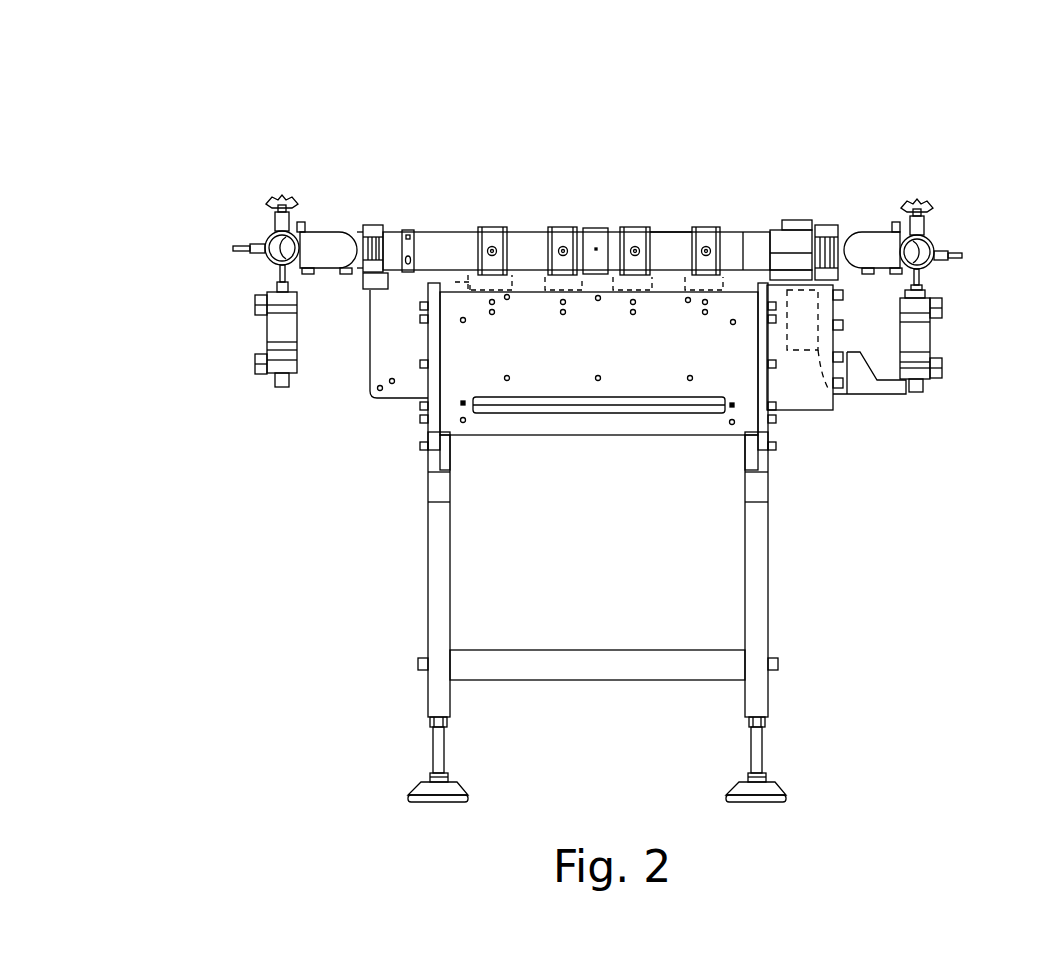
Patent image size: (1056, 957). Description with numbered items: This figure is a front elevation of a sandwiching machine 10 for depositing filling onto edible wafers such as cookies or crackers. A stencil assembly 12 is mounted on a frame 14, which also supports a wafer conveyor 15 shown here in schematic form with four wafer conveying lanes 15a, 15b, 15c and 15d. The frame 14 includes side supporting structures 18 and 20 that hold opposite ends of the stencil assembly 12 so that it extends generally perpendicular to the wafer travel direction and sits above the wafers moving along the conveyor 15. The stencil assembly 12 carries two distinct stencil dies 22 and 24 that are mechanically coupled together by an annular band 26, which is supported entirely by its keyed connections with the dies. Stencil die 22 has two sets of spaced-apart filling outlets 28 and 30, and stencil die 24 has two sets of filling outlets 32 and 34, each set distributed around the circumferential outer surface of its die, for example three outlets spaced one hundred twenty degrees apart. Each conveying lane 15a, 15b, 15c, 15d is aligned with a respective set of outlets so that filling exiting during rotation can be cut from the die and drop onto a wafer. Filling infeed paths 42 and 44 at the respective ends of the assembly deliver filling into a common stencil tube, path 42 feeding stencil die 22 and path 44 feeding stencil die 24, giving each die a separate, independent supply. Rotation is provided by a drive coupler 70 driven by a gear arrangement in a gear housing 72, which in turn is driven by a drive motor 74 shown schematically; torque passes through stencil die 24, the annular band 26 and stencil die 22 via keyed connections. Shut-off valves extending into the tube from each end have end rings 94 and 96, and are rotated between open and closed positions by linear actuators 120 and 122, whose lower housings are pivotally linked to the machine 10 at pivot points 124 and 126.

The sandwiching machine 10 is at (814, 141).
The stencil assembly 12 is at (862, 217).
The frame 14 is at (424, 432).
The wafer conveyor 15 is at (455, 280).
The wafer conveying lane 15a is at (510, 292).
The wafer conveying lane 15b is at (575, 292).
The wafer conveying lane 15c is at (720, 292).
The wafer conveying lane 15d is at (648, 292).
The side supporting structure 18 is at (386, 402).
The side supporting structure 20 is at (829, 422).
The stencil die 22 is at (533, 230).
The stencil die 24 is at (678, 230).
The annular band 26 is at (603, 230).
The filling outlets 28 is at (491, 247).
The filling outlets 30 is at (564, 247).
The filling outlets 32 is at (707, 250).
The filling outlets 34 is at (635, 247).
The filling infeed path 42 is at (316, 255).
The filling infeed path 44 is at (878, 253).
The drive coupler 70 is at (750, 232).
The gear housing 72 is at (796, 220).
The drive motor 74 is at (840, 403).
The end ring 94 is at (240, 247).
The end ring 96 is at (960, 255).
The actuator 120 is at (268, 333).
The actuator 122 is at (923, 347).
The pivot point 124 is at (270, 381).
The pivot point 126 is at (924, 386).